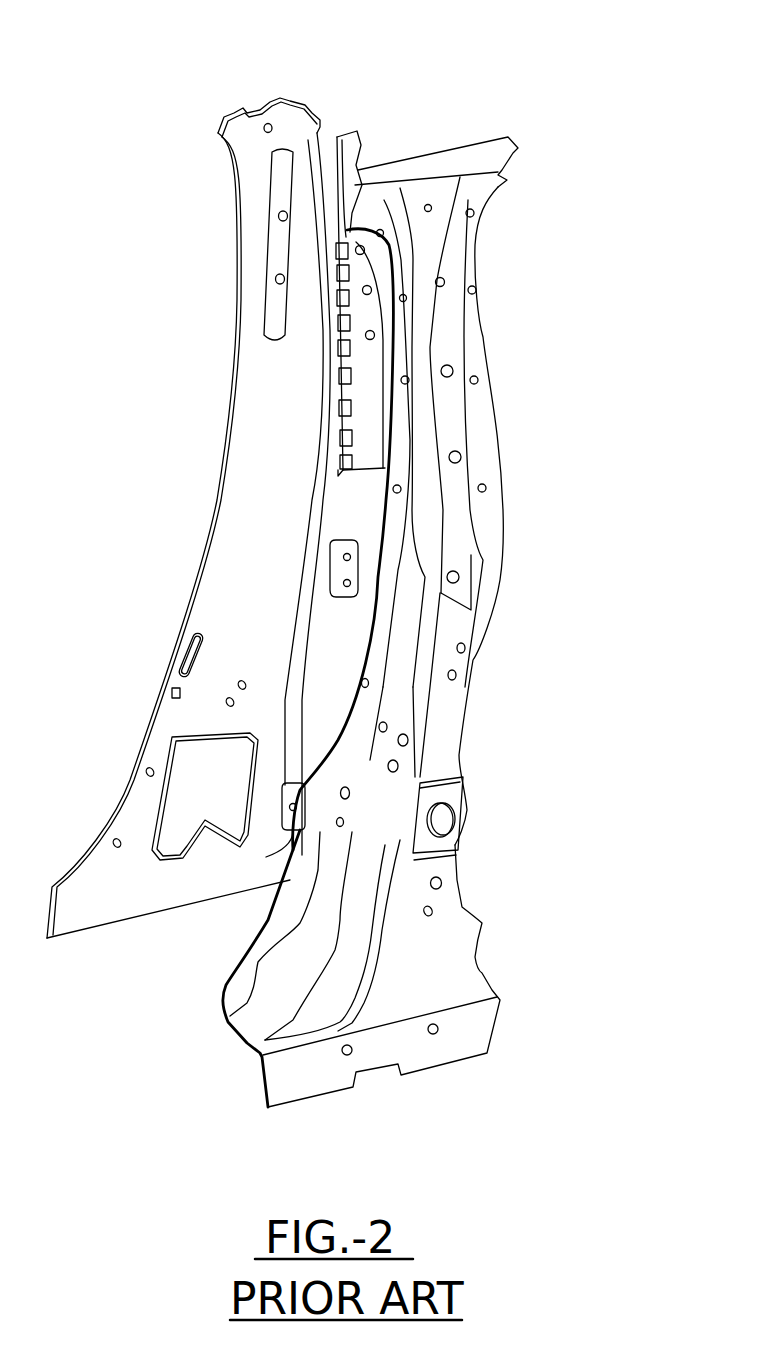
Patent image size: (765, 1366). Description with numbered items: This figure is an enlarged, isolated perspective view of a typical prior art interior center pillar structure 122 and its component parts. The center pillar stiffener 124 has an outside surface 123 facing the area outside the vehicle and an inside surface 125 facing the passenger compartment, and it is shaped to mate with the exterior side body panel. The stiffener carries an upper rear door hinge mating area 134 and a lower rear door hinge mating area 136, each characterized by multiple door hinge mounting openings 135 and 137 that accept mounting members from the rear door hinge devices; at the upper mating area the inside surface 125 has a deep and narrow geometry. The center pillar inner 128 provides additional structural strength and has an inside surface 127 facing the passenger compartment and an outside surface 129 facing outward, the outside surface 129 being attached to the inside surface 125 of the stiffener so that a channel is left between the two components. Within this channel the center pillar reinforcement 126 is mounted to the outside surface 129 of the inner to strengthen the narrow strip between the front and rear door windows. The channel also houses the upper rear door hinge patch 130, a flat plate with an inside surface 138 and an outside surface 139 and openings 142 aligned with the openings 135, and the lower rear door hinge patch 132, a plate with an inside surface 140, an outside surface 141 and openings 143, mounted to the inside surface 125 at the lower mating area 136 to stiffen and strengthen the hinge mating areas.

The interior center pillar structure 122 is at (413, 112).
The outside surface 123 is at (465, 1020).
The center pillar stiffener 124 is at (493, 253).
The inside surface 125 is at (254, 930).
The center pillar reinforcement 126 is at (362, 153).
The inside surface 127 is at (232, 257).
The center pillar inner 128 is at (185, 501).
The outside surface 129 is at (246, 173).
The upper rear door hinge patch 130 is at (382, 577).
The lower rear door hinge patch 132 is at (305, 783).
The upper rear door hinge mating area 134 is at (498, 683).
The door hinge mounting openings 135 is at (465, 648).
The lower rear door hinge mating area 136 is at (490, 888).
The door hinge mounting openings 137 is at (447, 883).
The inside surface 138 is at (357, 545).
The outside surface 139 is at (333, 600).
The inside surface 140 is at (282, 796).
The outside surface 141 is at (295, 783).
The openings 142 is at (352, 557).
The openings 143 is at (289, 878).